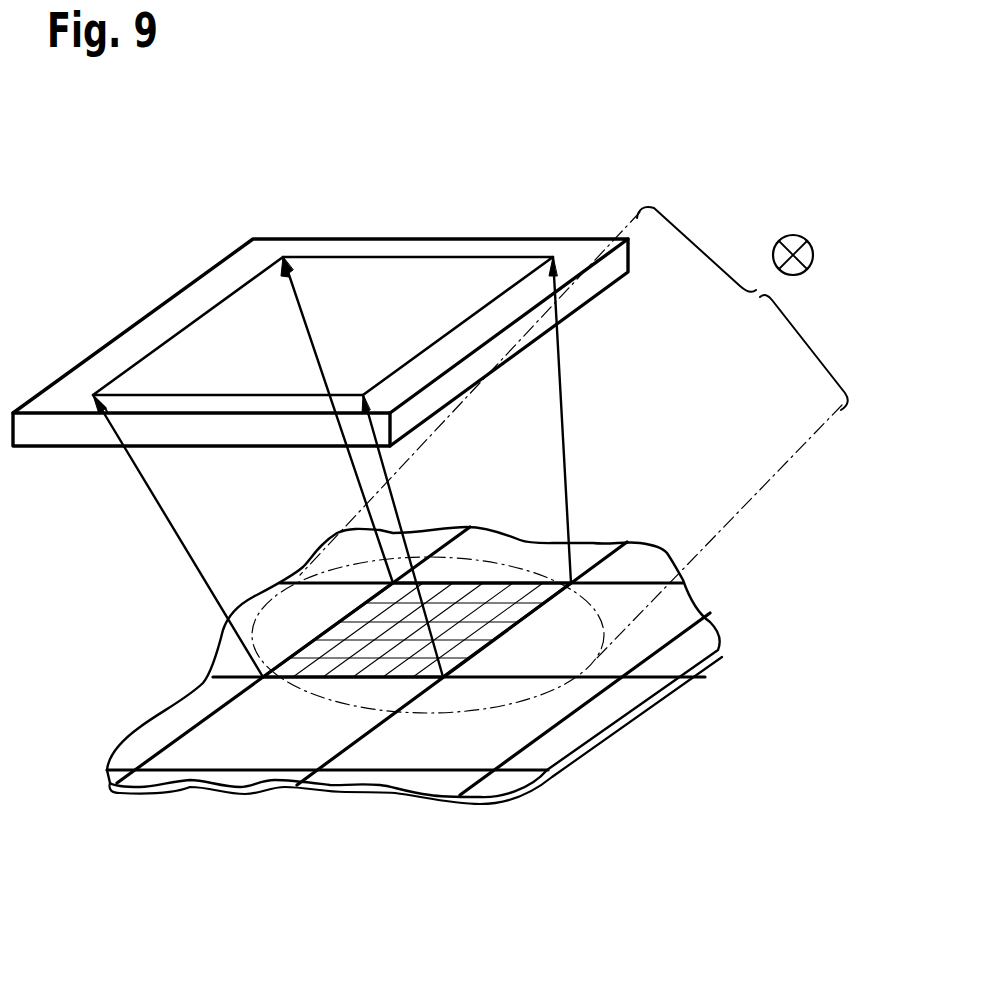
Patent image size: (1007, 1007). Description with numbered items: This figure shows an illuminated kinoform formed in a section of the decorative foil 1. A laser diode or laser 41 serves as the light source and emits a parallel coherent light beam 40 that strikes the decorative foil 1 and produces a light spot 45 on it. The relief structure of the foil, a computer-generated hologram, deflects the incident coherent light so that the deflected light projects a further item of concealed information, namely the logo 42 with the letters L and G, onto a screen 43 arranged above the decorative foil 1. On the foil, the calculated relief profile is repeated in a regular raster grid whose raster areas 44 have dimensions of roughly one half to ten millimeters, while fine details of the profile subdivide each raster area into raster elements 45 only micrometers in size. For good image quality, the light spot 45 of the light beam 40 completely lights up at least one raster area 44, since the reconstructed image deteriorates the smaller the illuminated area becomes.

The decorative foil 1 is at (583, 755).
The parallel coherent light beam 40 is at (762, 292).
The laser 41 is at (793, 235).
The logo 42 is at (344, 273).
The screen 43 is at (441, 245).
The raster area 44 is at (277, 737).
The raster elements 45 is at (457, 588).